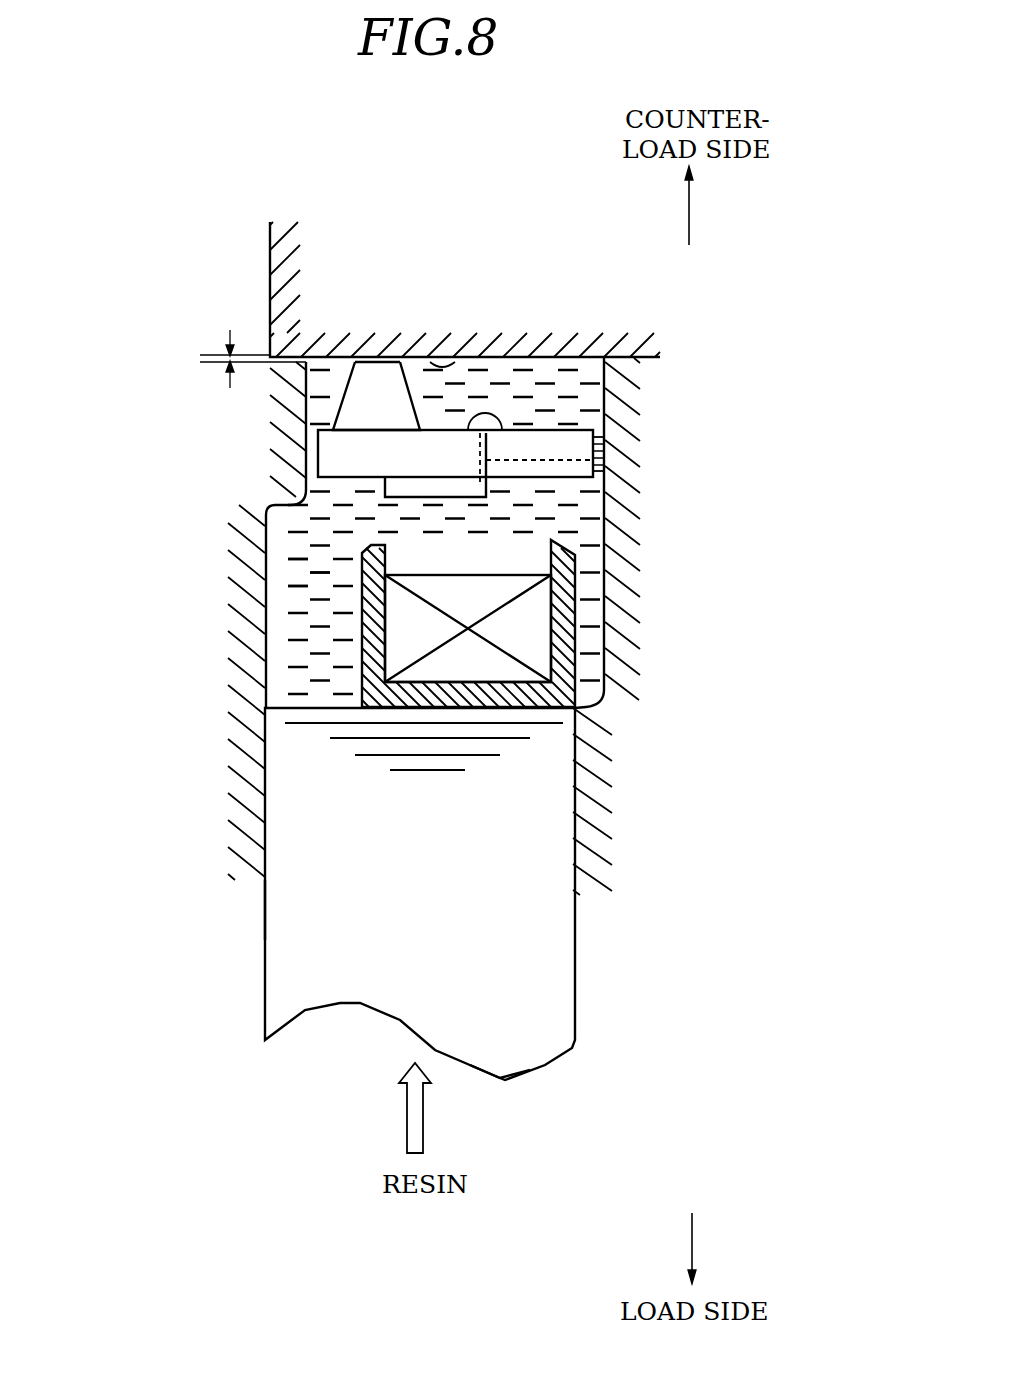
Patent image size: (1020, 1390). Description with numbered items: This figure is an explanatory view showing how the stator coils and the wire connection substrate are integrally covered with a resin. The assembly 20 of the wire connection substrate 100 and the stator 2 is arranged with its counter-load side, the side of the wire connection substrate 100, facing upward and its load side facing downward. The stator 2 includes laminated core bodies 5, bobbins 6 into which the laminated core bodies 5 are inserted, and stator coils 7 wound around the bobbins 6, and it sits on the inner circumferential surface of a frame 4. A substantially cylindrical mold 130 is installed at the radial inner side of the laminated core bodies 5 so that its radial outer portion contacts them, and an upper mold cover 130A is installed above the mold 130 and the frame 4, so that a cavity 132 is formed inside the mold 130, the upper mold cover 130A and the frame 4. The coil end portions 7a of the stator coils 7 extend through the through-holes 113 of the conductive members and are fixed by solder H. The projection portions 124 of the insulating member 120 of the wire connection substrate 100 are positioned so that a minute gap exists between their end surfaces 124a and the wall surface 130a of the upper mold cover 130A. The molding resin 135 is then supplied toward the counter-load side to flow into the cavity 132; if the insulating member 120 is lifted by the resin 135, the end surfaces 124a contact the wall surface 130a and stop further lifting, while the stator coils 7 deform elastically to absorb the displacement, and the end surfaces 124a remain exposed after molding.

The upper mold cover 130A is at (270, 270).
The mold 130 is at (232, 716).
The wall surface 130a is at (445, 362).
The cavity 132 is at (268, 558).
The molding resin 135 is at (292, 578).
The projection portions 124 is at (345, 390).
The end surfaces 124a is at (387, 362).
The solder H is at (487, 413).
The wire connection substrate 100 is at (316, 455).
The insulating member 120 is at (603, 445).
The through-holes 113 is at (604, 468).
The coil end portions 7a is at (470, 497).
The stator coils 7 is at (525, 622).
The bobbins 6 is at (365, 612).
The laminated core bodies 5 is at (540, 835).
The frame 4 is at (592, 885).
The stator 2 is at (258, 907).
The assembly 20 is at (500, 1112).